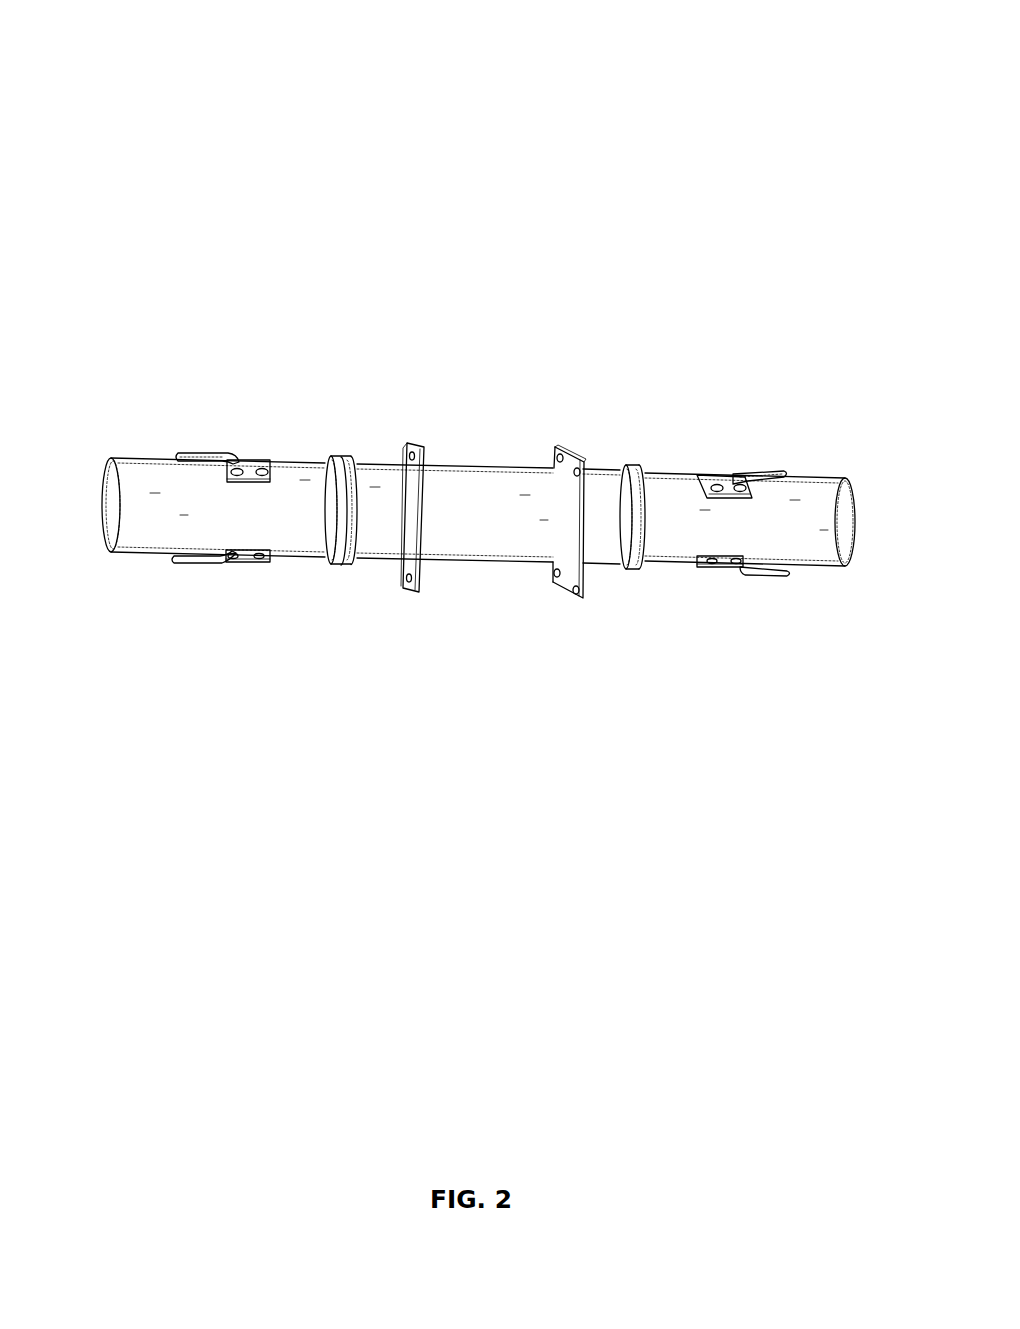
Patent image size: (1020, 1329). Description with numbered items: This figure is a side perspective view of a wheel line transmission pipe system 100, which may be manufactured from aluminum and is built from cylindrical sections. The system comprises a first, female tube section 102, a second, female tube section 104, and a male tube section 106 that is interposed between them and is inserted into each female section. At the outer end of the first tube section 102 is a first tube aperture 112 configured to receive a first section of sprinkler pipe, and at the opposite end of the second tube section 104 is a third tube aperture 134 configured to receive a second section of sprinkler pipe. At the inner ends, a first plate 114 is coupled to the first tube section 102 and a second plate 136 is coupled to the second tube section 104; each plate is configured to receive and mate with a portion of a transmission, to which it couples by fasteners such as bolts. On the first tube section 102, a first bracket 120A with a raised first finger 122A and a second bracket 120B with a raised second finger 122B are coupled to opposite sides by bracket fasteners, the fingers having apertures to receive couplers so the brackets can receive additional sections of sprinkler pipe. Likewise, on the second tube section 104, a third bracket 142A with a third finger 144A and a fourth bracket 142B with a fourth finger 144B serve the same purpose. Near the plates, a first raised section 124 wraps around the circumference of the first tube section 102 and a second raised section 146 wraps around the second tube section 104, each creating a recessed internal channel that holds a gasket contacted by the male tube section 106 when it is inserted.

The wheel line transmission pipe system 100 is at (290, 45).
The first tube section 102 is at (805, 545).
The second tube section 104 is at (128, 470).
The male tube section 106 is at (503, 546).
The first tube aperture 112 is at (858, 524).
The first plate 114 is at (580, 458).
The first bracket 120A is at (710, 472).
The second bracket 120B is at (715, 569).
The first finger 122A is at (763, 467).
The second finger 122B is at (756, 574).
The first raised section 124 is at (630, 469).
The third tube aperture 134 is at (97, 509).
The second plate 136 is at (408, 587).
The third bracket 142A is at (252, 465).
The fourth bracket 142B is at (250, 561).
The third finger 144A is at (187, 457).
The fourth finger 144B is at (203, 562).
The second raised section 146 is at (342, 550).